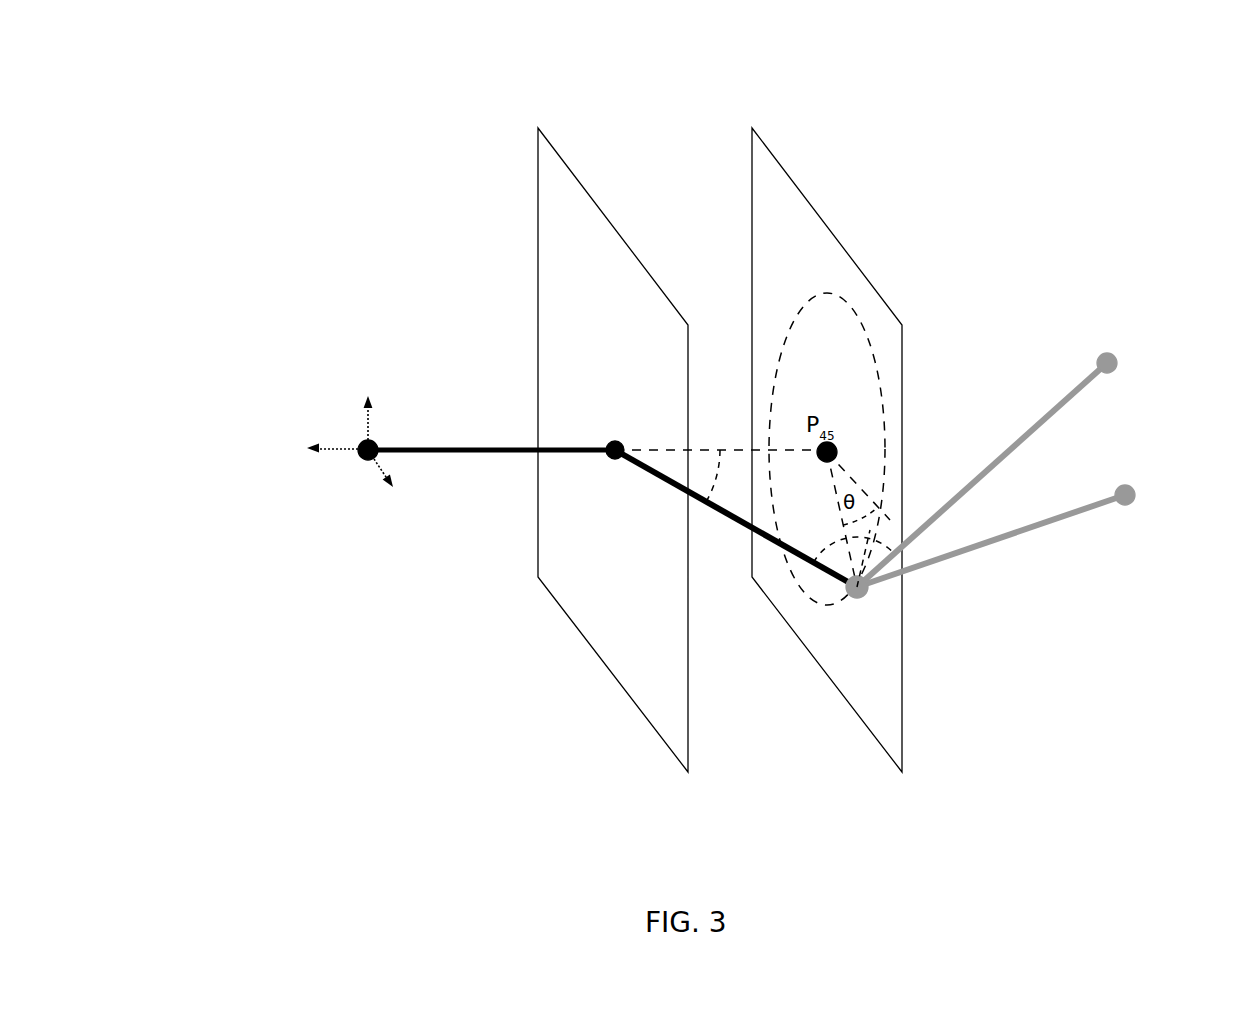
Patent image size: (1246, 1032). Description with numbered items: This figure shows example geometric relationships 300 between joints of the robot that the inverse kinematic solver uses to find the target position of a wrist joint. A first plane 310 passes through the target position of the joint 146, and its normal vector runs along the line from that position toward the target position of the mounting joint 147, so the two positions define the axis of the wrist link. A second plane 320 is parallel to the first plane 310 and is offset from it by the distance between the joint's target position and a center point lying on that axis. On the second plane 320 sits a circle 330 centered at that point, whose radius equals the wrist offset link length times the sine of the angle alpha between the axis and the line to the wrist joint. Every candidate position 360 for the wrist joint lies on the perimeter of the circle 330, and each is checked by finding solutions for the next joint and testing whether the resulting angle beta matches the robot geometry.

The geometric relationships 300 is at (203, 72).
The first plane 310 is at (525, 230).
The second plane 320 is at (808, 145).
The circle 330 is at (862, 312).
The joint 146 is at (358, 480).
The mounting joint 147 is at (600, 473).
The point P4 with rays to P3_1 and P3_2 360 is at (875, 598).